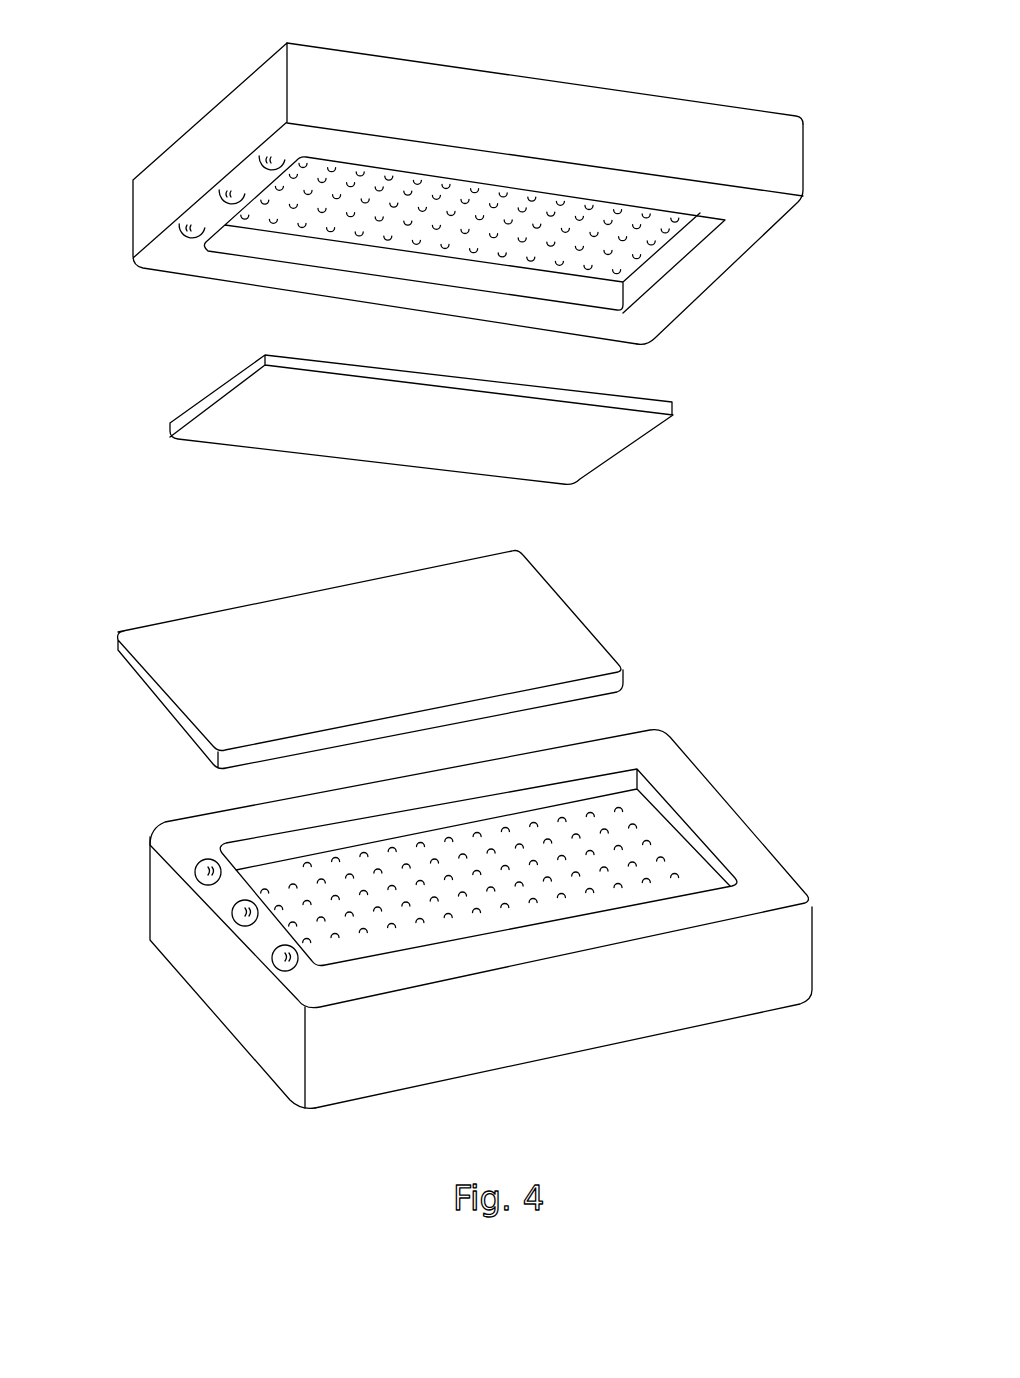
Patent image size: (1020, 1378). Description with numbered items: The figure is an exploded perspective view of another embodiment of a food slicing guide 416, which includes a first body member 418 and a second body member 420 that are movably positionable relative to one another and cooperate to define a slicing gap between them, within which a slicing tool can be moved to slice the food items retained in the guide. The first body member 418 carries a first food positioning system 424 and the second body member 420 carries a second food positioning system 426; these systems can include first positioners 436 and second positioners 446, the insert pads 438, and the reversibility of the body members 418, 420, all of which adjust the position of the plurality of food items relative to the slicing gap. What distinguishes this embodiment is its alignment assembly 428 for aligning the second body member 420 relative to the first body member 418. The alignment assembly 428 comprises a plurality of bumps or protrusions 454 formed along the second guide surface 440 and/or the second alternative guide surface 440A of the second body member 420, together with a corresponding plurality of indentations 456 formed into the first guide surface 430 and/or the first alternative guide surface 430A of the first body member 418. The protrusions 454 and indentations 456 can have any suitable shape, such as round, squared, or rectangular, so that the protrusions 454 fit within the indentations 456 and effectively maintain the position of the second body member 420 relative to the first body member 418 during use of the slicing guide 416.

The food slicing guide 416 is at (132, 1053).
The first body member 418 is at (485, 1052).
The second body member 420 is at (262, 88).
The first food positioning system 424 is at (268, 862).
The second food positioning system 426 is at (318, 237).
The alignment assembly 428 is at (216, 191).
The first guide surface 430 is at (638, 745).
The first alternative guide surface 430A is at (643, 1050).
The first positioners 436 is at (633, 900).
The insert pads 438 is at (360, 603).
The second guide surface 440 is at (748, 222).
The second alternative guide surface 440A is at (570, 80).
The second positioners 446 is at (417, 240).
The protrusions 454 is at (179, 231).
The indentations 456 is at (236, 920).